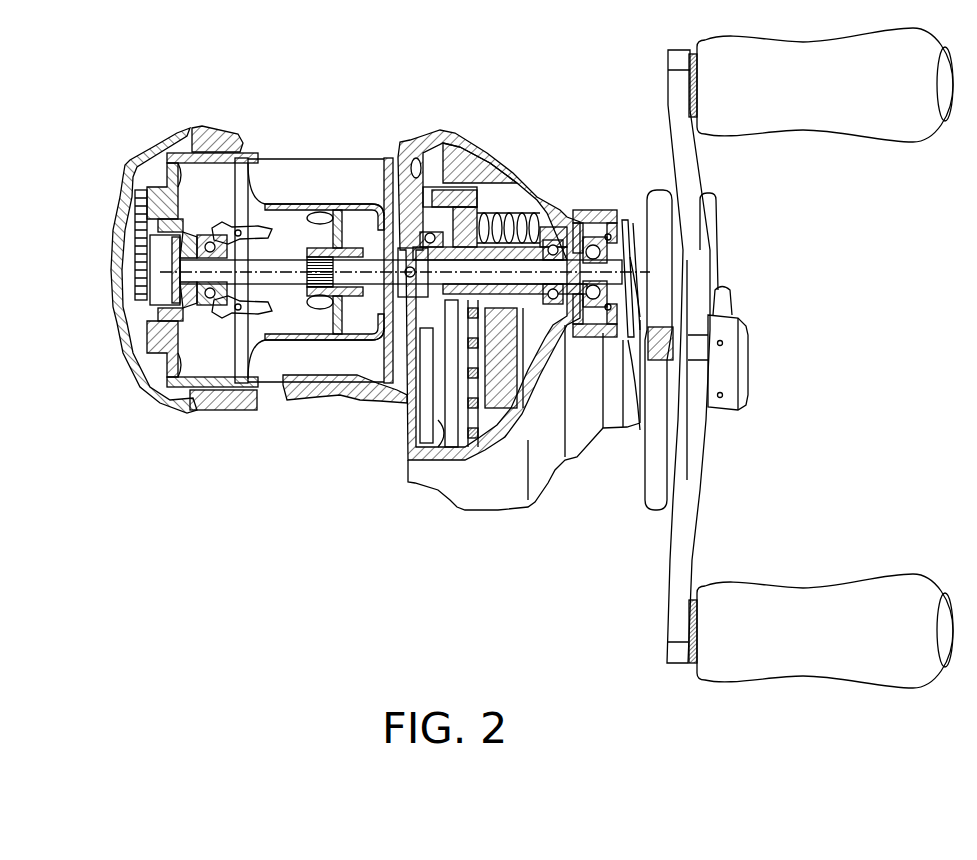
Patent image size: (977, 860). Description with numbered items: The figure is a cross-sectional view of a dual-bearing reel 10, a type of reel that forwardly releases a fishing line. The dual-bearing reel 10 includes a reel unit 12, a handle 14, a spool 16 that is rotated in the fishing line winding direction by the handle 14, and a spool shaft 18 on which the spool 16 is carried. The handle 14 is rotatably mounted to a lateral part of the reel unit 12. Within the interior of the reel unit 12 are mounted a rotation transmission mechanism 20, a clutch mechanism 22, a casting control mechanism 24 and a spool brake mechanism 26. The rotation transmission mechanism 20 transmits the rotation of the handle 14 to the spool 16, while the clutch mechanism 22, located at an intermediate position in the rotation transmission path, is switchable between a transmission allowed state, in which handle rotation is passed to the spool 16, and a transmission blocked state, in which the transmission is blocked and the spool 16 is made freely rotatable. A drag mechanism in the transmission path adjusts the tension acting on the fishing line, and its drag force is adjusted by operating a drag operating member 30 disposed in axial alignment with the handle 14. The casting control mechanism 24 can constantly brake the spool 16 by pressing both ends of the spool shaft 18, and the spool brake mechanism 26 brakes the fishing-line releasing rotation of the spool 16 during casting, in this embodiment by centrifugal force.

The dual-bearing reel 10 is at (100, 115).
The reel unit 12 is at (450, 115).
The handle 14 is at (733, 512).
The spool 16 is at (308, 176).
The spool shaft 18 is at (287, 400).
The rotation transmission mechanism 20 is at (484, 427).
The clutch mechanism 22 is at (404, 258).
The casting control mechanism 24 is at (608, 224).
The spool brake mechanism 26 is at (223, 392).
The drag operating member 30 is at (653, 190).